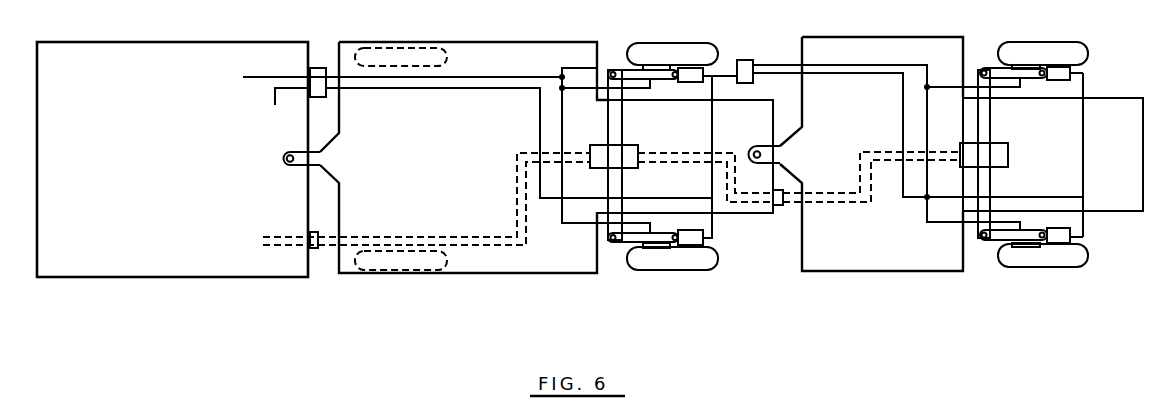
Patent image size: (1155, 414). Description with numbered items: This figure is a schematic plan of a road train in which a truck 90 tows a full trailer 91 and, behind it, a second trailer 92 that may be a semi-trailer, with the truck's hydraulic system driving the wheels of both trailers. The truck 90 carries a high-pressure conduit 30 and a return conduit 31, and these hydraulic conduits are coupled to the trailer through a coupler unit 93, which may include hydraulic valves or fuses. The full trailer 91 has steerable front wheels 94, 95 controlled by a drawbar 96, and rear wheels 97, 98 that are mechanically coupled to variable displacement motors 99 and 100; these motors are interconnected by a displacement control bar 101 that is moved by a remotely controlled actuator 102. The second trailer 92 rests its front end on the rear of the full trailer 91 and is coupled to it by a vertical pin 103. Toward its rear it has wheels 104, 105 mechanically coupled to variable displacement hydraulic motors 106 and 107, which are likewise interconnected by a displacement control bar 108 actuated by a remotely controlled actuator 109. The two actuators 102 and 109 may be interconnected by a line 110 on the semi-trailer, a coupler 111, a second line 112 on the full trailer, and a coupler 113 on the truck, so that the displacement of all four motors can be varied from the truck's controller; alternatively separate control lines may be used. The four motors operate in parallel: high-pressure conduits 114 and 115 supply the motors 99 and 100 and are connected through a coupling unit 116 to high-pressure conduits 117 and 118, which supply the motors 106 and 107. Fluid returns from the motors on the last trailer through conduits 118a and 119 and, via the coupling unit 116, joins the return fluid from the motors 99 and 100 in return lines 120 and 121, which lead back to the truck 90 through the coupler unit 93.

The high-pressure conduit 30 is at (272, 77).
The return conduit 31 is at (275, 97).
The truck 90 is at (220, 43).
The full trailer 91 is at (547, 42).
The second trailer 92 is at (908, 37).
The coupler unit 93 is at (318, 68).
The steerable front wheel 94 is at (430, 48).
The steerable front wheel 95 is at (430, 271).
The drawbar 96 is at (331, 174).
The rear wheel 97 is at (695, 43).
The rear wheel 98 is at (697, 270).
The variable displacement motor 99 is at (706, 72).
The variable displacement motor 100 is at (705, 240).
The displacement control bar 101 is at (607, 118).
The remotely controlled actuator 102 is at (604, 166).
The vertical pin 103 is at (757, 150).
The wheel 104 is at (1050, 45).
The wheel 105 is at (1060, 266).
The variable displacement hydraulic motor 106 is at (1072, 73).
The variable displacement hydraulic motor 107 is at (1072, 237).
The displacement control bar 108 is at (990, 118).
The remotely controlled actuator 109 is at (1008, 155).
The line 110 is at (838, 195).
The coupler 111 is at (780, 206).
The second line 112 is at (498, 237).
The coupler 113 is at (316, 248).
The high-pressure conduit 114 is at (458, 77).
The high-pressure conduit 115 is at (561, 216).
The coupling unit 116 is at (750, 60).
The high-pressure conduit 117 is at (903, 65).
The high-pressure conduit 118 is at (955, 212).
The return conduit 118a is at (1086, 134).
The return conduit 119 is at (888, 75).
The return line 120 is at (712, 226).
The return line 121 is at (404, 88).